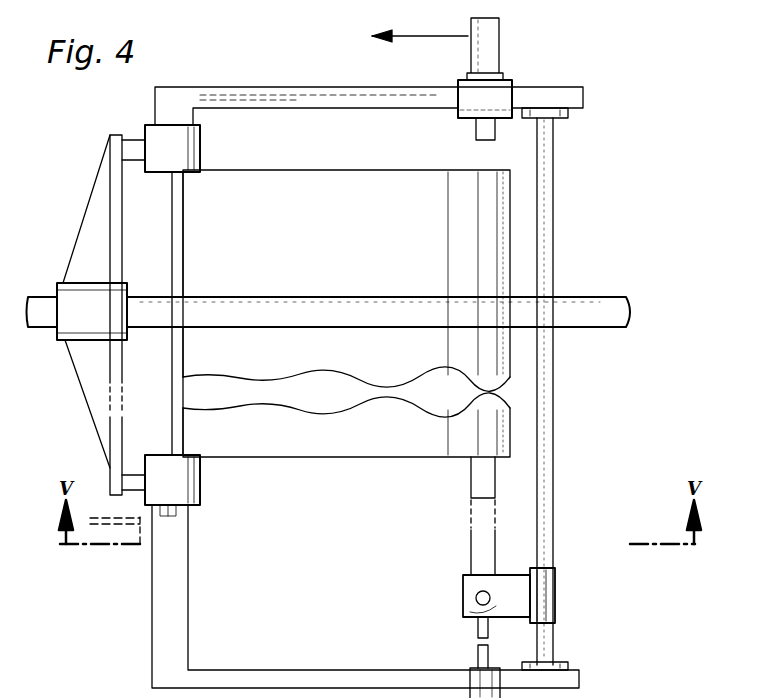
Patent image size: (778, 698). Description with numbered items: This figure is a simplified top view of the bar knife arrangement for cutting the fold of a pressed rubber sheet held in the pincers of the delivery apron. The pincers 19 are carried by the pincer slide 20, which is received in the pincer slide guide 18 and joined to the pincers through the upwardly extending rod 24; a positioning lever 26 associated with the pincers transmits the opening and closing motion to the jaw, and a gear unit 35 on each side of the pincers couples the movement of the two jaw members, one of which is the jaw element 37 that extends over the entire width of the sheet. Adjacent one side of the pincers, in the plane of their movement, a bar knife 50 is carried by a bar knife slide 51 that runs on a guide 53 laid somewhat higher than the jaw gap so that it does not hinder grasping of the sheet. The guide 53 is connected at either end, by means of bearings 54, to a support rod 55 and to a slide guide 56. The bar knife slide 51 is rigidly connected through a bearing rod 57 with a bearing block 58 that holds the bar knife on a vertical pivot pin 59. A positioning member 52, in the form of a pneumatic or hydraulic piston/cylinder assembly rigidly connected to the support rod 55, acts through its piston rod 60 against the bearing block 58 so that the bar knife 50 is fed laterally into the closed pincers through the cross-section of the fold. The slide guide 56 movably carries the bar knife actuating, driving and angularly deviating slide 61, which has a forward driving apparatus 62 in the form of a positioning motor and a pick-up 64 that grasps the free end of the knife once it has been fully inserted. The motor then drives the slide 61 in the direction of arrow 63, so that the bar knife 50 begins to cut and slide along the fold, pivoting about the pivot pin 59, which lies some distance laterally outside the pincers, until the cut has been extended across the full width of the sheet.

The pincer slide guide 18 is at (592, 297).
The pincers 19 is at (168, 254).
The pincer slide 20 is at (62, 290).
The rod 24 is at (118, 224).
The positioning lever 26 is at (121, 548).
The gear unit 35 is at (185, 148).
The jaw element 37 is at (278, 180).
The bar knife 50 is at (471, 548).
The bar knife slide 51 is at (548, 610).
The positioning member 52 is at (510, 683).
The guide 53 is at (546, 553).
The bearings 54 is at (566, 117).
The support rod 55 is at (175, 650).
The slide guide 56 is at (308, 96).
The bearing rod 57 is at (533, 592).
The bearing block 58 is at (463, 585).
The pivot pin 59 is at (477, 602).
The piston rod 60 is at (477, 655).
The bar knife slide 61 is at (500, 90).
The forward driving apparatus 62 is at (486, 38).
The arrow 63 is at (418, 36).
The pick-up 64 is at (478, 132).